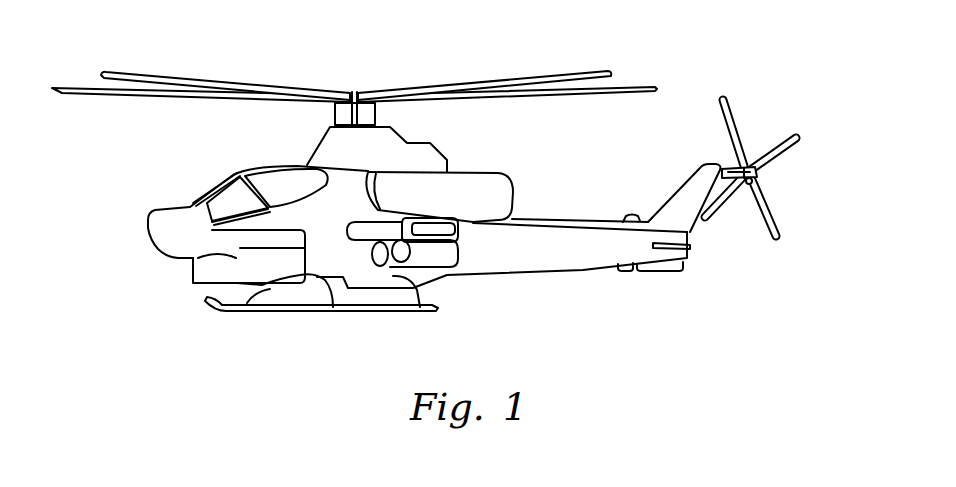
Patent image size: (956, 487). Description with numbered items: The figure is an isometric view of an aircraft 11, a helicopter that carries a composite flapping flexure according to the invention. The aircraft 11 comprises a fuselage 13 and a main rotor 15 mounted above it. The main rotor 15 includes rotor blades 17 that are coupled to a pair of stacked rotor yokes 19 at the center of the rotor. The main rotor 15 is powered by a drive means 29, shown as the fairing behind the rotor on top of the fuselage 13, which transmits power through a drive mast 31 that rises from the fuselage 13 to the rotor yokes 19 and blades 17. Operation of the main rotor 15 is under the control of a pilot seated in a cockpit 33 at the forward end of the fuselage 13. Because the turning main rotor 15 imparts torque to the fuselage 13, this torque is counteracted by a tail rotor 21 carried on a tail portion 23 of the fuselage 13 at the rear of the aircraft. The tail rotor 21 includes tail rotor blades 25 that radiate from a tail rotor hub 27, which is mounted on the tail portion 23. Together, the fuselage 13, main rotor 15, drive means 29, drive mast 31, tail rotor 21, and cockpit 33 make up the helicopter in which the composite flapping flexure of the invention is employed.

The aircraft 11 is at (445, 43).
The fuselage 13 is at (438, 282).
The main rotor 15 is at (366, 86).
The rotor blades 17 is at (137, 75).
The stacked rotor yokes 19 is at (355, 93).
The tail rotor 21 is at (771, 175).
The tail portion 23 is at (670, 200).
The tail rotor blades 25 is at (733, 115).
The tail rotor hub 27 is at (752, 166).
The drive means 29 is at (487, 172).
The drive mast 31 is at (336, 112).
The cockpit 33 is at (237, 173).